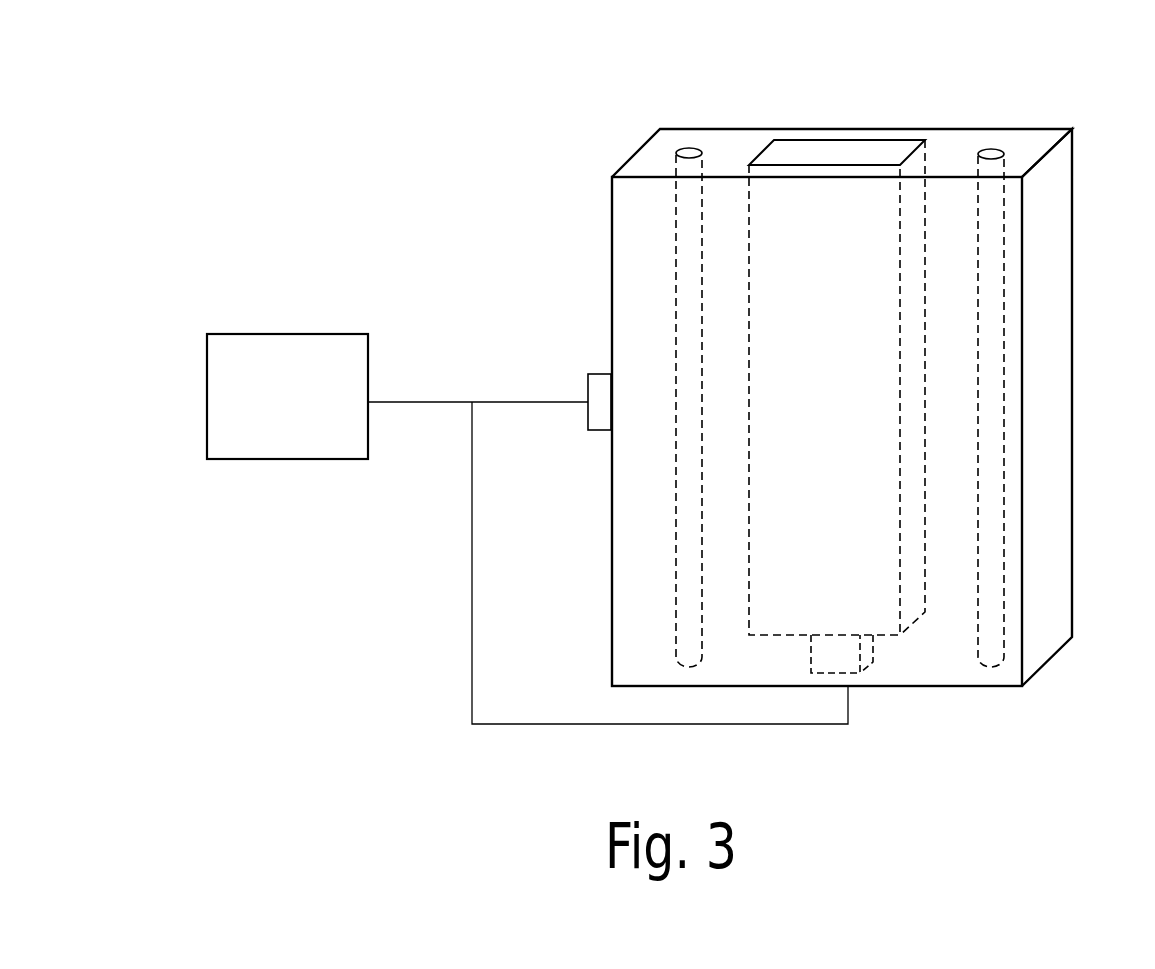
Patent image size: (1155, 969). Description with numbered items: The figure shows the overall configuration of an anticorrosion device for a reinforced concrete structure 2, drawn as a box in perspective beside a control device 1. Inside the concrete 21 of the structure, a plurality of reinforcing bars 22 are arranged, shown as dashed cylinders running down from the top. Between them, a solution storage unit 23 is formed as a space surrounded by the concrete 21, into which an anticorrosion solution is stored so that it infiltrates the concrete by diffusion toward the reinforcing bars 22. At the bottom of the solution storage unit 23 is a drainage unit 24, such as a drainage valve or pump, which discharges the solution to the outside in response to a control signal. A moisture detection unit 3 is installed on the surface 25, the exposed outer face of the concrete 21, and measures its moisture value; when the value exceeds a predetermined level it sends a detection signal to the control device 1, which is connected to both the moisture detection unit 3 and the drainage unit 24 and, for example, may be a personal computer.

The control device 1 is at (302, 332).
The reinforced concrete structure 2 is at (830, 378).
The moisture detection unit 3 is at (597, 372).
The concrete 21 is at (941, 147).
The reinforcing bars 22 is at (693, 148).
The solution storage unit 23 is at (836, 138).
The drainage unit 24 is at (855, 675).
The surface 25 is at (1073, 227).